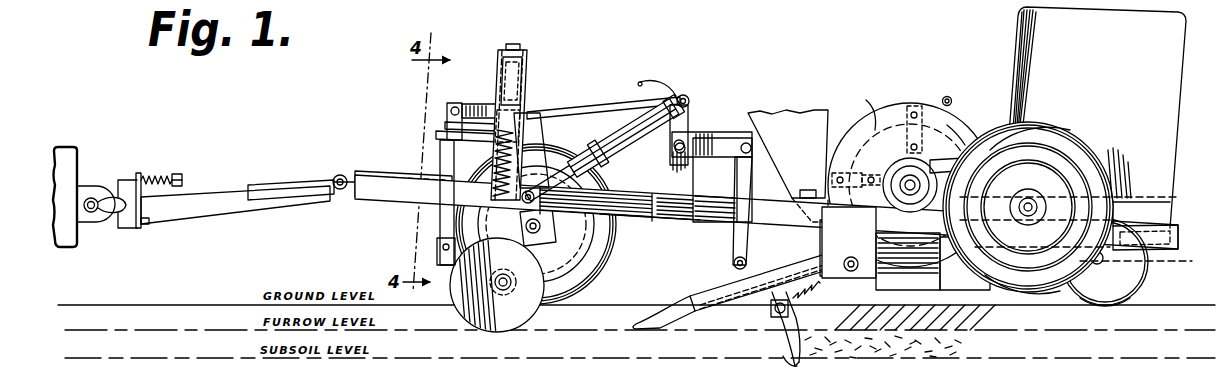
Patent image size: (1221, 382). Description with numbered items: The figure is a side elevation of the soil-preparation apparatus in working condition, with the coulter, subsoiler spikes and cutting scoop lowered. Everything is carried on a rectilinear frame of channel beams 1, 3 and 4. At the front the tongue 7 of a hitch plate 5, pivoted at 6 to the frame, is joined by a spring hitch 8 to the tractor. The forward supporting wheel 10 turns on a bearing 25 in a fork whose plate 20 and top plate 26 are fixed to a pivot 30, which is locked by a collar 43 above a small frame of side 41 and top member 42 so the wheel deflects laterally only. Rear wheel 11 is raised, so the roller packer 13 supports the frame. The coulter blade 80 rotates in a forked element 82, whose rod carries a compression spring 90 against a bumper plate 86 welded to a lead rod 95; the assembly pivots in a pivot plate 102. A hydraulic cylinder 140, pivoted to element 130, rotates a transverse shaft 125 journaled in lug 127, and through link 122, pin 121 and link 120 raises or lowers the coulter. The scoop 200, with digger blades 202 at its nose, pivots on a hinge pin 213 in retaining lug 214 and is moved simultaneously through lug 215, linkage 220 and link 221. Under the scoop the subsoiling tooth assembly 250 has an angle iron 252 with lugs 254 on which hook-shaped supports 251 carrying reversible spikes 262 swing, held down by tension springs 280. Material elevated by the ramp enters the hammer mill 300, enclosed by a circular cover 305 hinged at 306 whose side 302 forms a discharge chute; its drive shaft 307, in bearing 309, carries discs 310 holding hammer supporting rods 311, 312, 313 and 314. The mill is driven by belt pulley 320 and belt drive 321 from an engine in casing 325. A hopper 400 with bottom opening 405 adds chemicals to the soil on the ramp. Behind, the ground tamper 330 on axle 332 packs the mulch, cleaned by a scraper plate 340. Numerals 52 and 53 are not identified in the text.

The channel beam 1 is at (638, 219).
The channel beam 3 is at (368, 172).
The channel beam 4 is at (1180, 240).
The hitch plate 5 is at (314, 183).
The pivot 6 is at (341, 176).
The tongue 7 is at (250, 208).
The spring hitch 8 is at (140, 175).
The forward supporting wheel 10 is at (600, 260).
The rear supporting wheel 11 is at (1038, 121).
The roller packer 13 is at (1140, 284).
The plate 20 is at (539, 123).
The bearing 25 is at (539, 238).
The top plate 26 is at (495, 110).
The pivot 30 is at (498, 70).
The side 41 is at (527, 86).
The top member 42 is at (527, 63).
The collar 43 is at (520, 46).
The wheel hub 52 is at (1046, 207).
The wheel tire 53 is at (1005, 262).
The coulter blade 80 is at (480, 330).
The forked element 82 is at (547, 313).
The bumper plate 86 is at (447, 126).
The compression spring 90 is at (596, 148).
The lead rod 95 is at (438, 223).
The pivot plate 102 is at (437, 138).
The link 120 is at (448, 111).
The pin 121 is at (455, 103).
The link 122 is at (582, 108).
The transverse shaft 125 is at (722, 180).
The lug 127 is at (668, 167).
The element 130 is at (690, 102).
The hydraulic cylinder 140 is at (633, 131).
The scoop 200 is at (697, 293).
The digger blades 202 is at (652, 326).
The hinge pin 213 is at (880, 268).
The retaining lug 214 is at (821, 242).
The lug 215 is at (733, 264).
The pivoted linkage 220 is at (735, 184).
The link 221 is at (720, 134).
The subsoiling tooth assembly 250 is at (800, 362).
The support 251 is at (820, 318).
The angle iron 252 is at (770, 307).
The lug 254 is at (779, 322).
The subsoiling spikes 262 is at (783, 358).
The tension spring 280 is at (819, 290).
The hammer mill 300 is at (899, 101).
The cover side 302 is at (946, 295).
The circular cover 305 is at (857, 150).
The hinge 306 is at (950, 99).
The drive shaft 307 is at (908, 176).
The bearing 309 is at (868, 188).
The circular discs 310 is at (960, 132).
The hammer supporting rod 311 is at (993, 166).
The hammer supporting rod 312 is at (923, 145).
The hammer supporting rod 313 is at (862, 176).
The hammer supporting rod 314 is at (928, 248).
The belt pulley 320 is at (849, 242).
The belt drive 321 is at (1060, 130).
The casing 325 is at (1030, 32).
The ground tamper 330 is at (1150, 297).
The axle 332 is at (1162, 262).
The scraper plate 340 is at (1175, 229).
The hopper 400 is at (780, 113).
The opening 405 is at (792, 201).